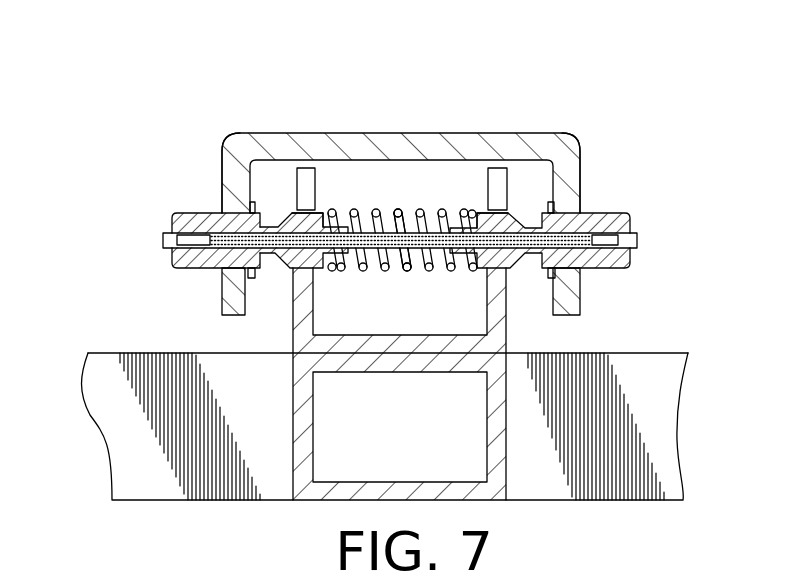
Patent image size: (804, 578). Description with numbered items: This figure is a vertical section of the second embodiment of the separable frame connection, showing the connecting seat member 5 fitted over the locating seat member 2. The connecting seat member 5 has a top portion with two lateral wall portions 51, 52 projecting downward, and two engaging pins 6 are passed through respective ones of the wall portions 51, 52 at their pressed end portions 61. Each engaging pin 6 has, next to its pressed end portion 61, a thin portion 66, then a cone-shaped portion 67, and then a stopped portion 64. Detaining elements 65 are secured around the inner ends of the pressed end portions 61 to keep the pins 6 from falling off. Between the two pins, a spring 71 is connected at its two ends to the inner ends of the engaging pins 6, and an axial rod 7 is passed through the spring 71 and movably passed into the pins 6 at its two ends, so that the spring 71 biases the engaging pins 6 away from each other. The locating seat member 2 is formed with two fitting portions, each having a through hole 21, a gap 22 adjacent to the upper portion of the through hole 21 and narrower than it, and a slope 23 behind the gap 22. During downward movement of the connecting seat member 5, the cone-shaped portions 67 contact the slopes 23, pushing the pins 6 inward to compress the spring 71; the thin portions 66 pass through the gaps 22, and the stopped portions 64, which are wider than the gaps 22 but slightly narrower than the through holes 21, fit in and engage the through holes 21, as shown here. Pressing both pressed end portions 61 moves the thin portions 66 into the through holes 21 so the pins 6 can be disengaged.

The locating seat member 2 is at (293, 334).
The through hole 21 is at (293, 283).
The connecting seat member 5 is at (402, 133).
The lateral wall portion 51 is at (222, 183).
The lateral wall portion 52 is at (580, 185).
The pressed end portion 61 is at (177, 212).
The engaging pin 6 is at (160, 241).
The thin portion 66 is at (266, 222).
The cone-shaped portion 67 is at (284, 218).
The detaining element 65 is at (251, 200).
The stopped portion 64 is at (325, 210).
The slope 23 is at (300, 168).
The gap 22 is at (310, 168).
The axial rod 7 is at (430, 210).
The spring 71 is at (398, 210).